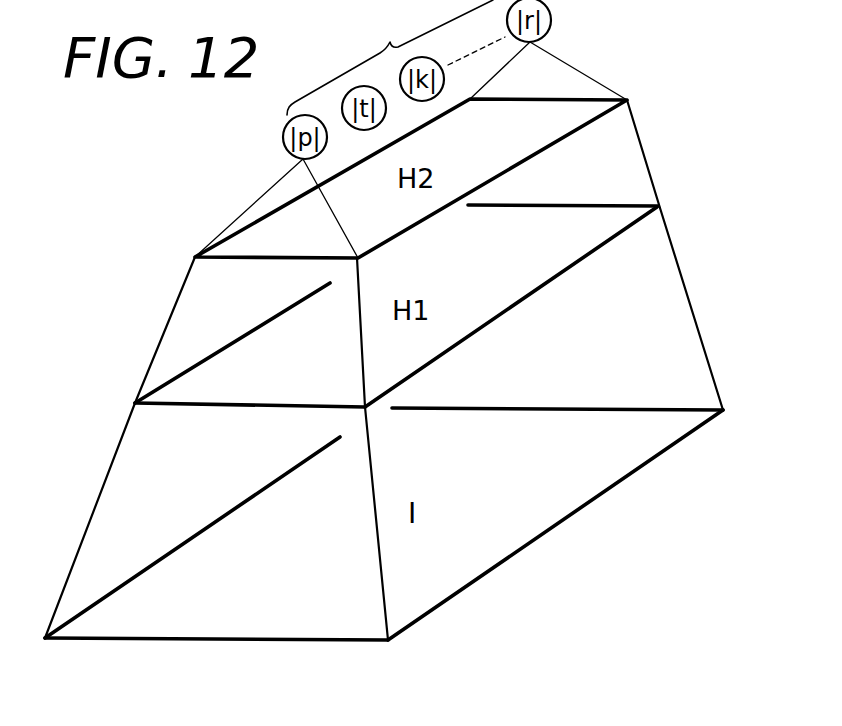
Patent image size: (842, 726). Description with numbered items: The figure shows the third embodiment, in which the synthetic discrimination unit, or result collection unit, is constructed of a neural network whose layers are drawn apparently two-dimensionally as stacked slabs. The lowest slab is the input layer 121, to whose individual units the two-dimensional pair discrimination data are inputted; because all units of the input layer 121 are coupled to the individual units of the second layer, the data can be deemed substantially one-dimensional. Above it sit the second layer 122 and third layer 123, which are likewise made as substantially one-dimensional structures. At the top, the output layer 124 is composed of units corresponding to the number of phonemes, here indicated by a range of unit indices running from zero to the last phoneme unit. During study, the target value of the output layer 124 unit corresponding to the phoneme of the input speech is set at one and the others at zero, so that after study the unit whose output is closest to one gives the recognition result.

The input layer 121 is at (552, 530).
The first hidden layer H1 122 is at (573, 265).
The second hidden layer H2 123 is at (575, 133).
The output layer 124 is at (390, 57).